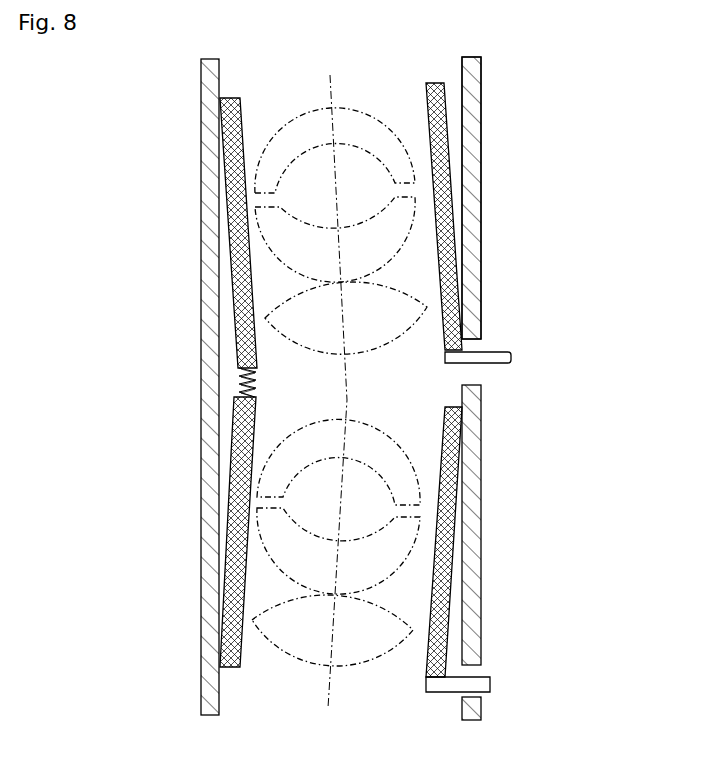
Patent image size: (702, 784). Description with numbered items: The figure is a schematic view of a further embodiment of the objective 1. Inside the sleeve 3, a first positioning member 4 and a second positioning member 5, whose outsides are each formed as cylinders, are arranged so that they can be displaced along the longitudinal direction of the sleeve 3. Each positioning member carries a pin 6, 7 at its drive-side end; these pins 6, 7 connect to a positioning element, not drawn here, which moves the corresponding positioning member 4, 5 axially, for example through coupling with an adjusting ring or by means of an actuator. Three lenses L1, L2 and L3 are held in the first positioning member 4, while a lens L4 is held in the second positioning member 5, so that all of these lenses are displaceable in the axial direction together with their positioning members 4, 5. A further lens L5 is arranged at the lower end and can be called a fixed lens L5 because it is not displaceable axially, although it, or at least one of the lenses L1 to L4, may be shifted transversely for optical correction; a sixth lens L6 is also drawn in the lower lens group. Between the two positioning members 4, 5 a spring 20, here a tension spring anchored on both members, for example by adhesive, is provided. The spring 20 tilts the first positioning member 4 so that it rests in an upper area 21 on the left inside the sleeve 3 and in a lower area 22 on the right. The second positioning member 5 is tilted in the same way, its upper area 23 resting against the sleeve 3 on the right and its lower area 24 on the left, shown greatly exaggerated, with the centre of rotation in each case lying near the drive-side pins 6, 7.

The objective 1 is at (183, 253).
The sleeve 3 is at (468, 98).
The first positioning member 4 is at (450, 258).
The second positioning member 5 is at (450, 583).
The pin 6 is at (487, 362).
The pin 7 is at (487, 689).
The spring 20 is at (245, 390).
The upper area 21 is at (218, 122).
The lower area 22 is at (468, 326).
The upper area 23 is at (468, 421).
The lower area 24 is at (218, 641).
The lens L1 is at (418, 178).
The lens L2 is at (428, 205).
The lens L3 is at (434, 306).
The lens L4 is at (424, 498).
The fixed lens L5 is at (431, 517).
The sixth lens L6 is at (421, 630).